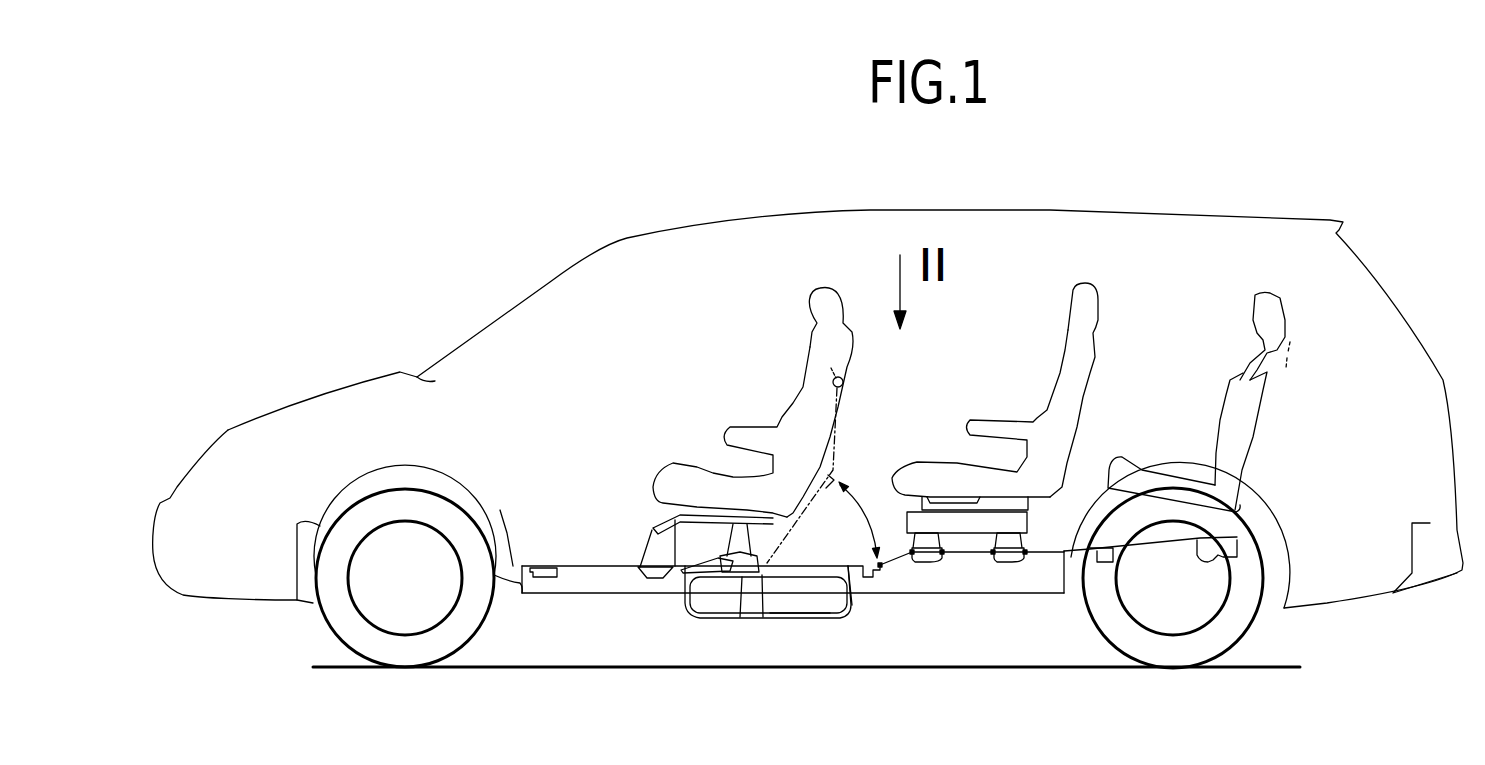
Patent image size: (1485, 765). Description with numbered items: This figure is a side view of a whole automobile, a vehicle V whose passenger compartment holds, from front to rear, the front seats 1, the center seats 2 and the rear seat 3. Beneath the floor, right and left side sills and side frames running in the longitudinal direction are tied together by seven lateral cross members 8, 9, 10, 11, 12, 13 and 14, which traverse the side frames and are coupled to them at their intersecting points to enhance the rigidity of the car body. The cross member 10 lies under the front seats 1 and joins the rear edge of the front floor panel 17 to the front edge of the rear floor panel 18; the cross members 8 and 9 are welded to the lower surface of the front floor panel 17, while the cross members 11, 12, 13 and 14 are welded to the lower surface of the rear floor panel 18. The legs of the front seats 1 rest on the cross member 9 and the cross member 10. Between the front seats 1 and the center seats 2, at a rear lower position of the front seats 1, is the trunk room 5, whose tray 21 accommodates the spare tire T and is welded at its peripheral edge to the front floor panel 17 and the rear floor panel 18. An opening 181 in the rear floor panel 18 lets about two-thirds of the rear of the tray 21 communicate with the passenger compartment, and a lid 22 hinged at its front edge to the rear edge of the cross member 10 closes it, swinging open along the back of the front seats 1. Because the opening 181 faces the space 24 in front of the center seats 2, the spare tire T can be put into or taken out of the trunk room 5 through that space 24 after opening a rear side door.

The vehicle V is at (1050, 199).
The front seat 1 is at (795, 410).
The center seat 2 is at (1053, 393).
The rear seat 3 is at (1237, 410).
The trunk room 5 is at (693, 570).
The cross member 8 is at (557, 577).
The cross member 9 is at (645, 575).
The cross member 10 is at (740, 615).
The cross member 11 is at (927, 563).
The cross member 12 is at (1015, 563).
The cross member 13 is at (1102, 566).
The cross member 14 is at (1200, 556).
The front floor panel 17 is at (607, 565).
The rear floor panel 18 is at (1046, 548).
The opening 181 is at (797, 608).
The tray 21 is at (853, 606).
The lid 22 is at (807, 565).
The space 24 is at (897, 417).
The spare tire T is at (797, 607).